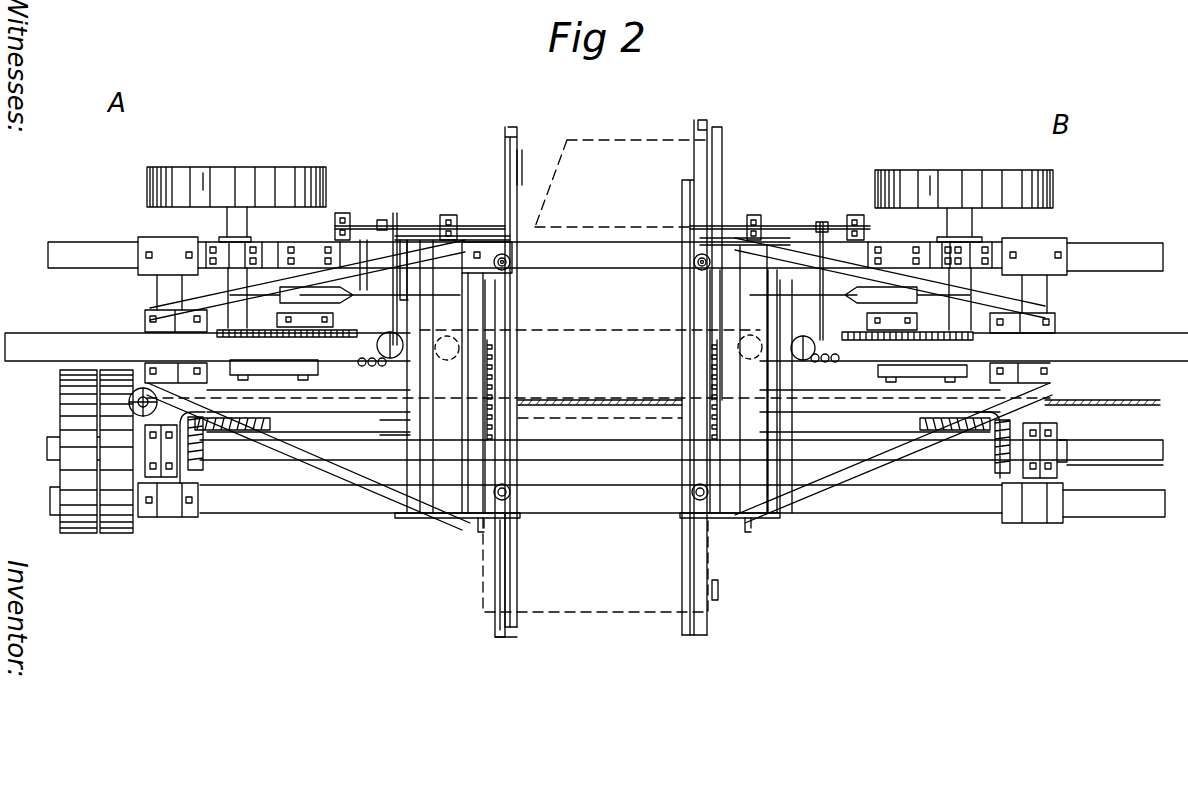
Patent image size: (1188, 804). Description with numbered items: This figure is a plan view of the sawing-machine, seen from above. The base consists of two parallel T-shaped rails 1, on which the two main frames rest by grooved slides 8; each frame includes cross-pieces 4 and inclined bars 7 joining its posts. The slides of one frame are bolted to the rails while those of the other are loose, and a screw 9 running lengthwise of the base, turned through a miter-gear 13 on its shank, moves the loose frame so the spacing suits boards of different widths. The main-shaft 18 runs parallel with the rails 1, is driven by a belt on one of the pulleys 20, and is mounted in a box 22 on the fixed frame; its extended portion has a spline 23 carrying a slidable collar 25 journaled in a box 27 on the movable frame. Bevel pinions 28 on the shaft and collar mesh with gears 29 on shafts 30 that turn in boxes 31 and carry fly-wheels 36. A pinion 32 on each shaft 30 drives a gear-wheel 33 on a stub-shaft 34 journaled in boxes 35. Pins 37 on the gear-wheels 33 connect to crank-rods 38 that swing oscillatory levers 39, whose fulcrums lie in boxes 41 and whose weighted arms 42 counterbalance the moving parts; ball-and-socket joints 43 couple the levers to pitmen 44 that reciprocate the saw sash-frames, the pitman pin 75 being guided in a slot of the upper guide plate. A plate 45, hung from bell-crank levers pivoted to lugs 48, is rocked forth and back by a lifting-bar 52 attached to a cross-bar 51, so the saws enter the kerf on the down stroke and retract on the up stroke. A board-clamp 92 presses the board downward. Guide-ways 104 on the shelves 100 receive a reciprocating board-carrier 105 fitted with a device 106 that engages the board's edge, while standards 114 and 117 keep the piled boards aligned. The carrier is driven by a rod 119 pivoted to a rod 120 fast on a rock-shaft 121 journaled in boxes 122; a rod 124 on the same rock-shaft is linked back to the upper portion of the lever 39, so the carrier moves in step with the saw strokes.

The rails 1 is at (1145, 251).
The cross-pieces 4 is at (741, 512).
The inclined bars 7 is at (216, 306).
The grooved slides 8 is at (171, 520).
The screw 9 is at (1096, 403).
The miter-gear 13 is at (58, 406).
The main-shaft 18 is at (553, 440).
The pulleys 20 is at (108, 538).
The journaled box 22 is at (160, 478).
The spline 23 is at (628, 466).
The slidable collar 25 is at (1070, 446).
The box 27 is at (1058, 474).
The bevel pinions 28 is at (196, 476).
The gears 29 is at (216, 432).
The shafts 30 is at (238, 213).
The boxes 31 is at (228, 246).
The pinion 32 is at (232, 340).
The gear-wheel 33 is at (925, 353).
The stub-shaft 34 is at (318, 300).
The boxes 35 is at (300, 245).
The fly-wheel 36 is at (147, 178).
The pins 37 is at (320, 380).
The crank-rods 38 is at (262, 372).
The oscillatory levers 39 is at (333, 357).
The boxes 41 is at (150, 318).
The weighted arms 42 is at (15, 334).
The ball-and-socket joints 43 is at (403, 240).
The pitmen 44 is at (432, 345).
The plate 45 is at (468, 440).
The lugs 48 is at (400, 520).
The cross-bar 51 is at (402, 431).
The lifting-bar 52 is at (363, 285).
The pitman pin 75 is at (468, 352).
The board-clamp 92 is at (505, 358).
The shelves 100 is at (500, 640).
The guide-ways 104 is at (688, 595).
The board-carrier 105 is at (512, 292).
The device 106 is at (508, 560).
The standards 114 is at (478, 522).
The standards 117 is at (707, 620).
The rod 119 is at (505, 162).
The rod 120 is at (520, 165).
The rock-shaft 121 is at (421, 227).
The boxes 122 is at (347, 214).
The rod 124 is at (391, 236).